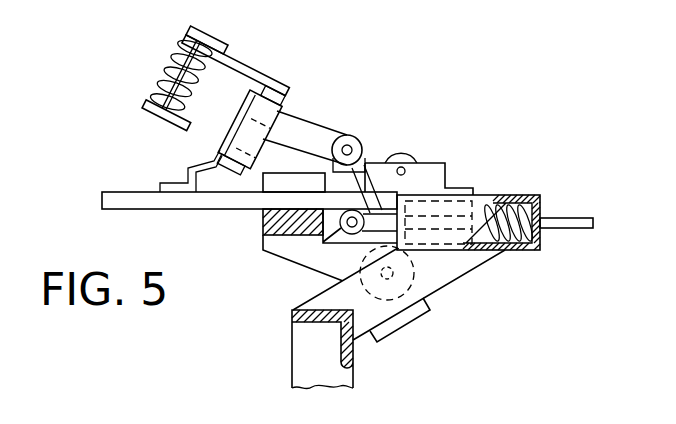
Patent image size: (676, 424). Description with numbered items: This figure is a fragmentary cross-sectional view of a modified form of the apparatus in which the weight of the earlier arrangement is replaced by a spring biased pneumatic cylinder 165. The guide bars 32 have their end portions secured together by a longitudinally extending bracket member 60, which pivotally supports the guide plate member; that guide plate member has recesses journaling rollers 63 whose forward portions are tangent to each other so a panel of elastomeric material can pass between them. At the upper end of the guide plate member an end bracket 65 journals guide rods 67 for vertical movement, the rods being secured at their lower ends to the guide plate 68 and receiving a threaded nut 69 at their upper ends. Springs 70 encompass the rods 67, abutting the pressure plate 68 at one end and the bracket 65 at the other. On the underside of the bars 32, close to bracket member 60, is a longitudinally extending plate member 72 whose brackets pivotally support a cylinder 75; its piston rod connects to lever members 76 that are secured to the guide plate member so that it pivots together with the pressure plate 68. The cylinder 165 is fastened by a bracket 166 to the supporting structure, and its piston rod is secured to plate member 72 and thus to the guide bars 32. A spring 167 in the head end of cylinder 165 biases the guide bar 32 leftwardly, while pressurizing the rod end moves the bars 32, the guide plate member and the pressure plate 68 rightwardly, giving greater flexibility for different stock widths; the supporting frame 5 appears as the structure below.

The frame channel 5 is at (296, 371).
The guide bars 32 is at (108, 198).
The longitudinally extending bracket member 60 is at (188, 176).
The rollers 63 is at (287, 108).
The end bracket 65 is at (237, 62).
The guide rods 67 is at (177, 68).
The guide plate 68 is at (147, 111).
The threaded nut 69 is at (212, 37).
The springs 70 is at (170, 93).
The longitudinally extending plate member 72 is at (264, 220).
The cylinder 75 is at (397, 328).
The lever members 76 is at (303, 142).
The spring biased pneumatic cylinder 165 is at (430, 208).
The bracket 166 is at (432, 288).
The spring 167 is at (505, 197).